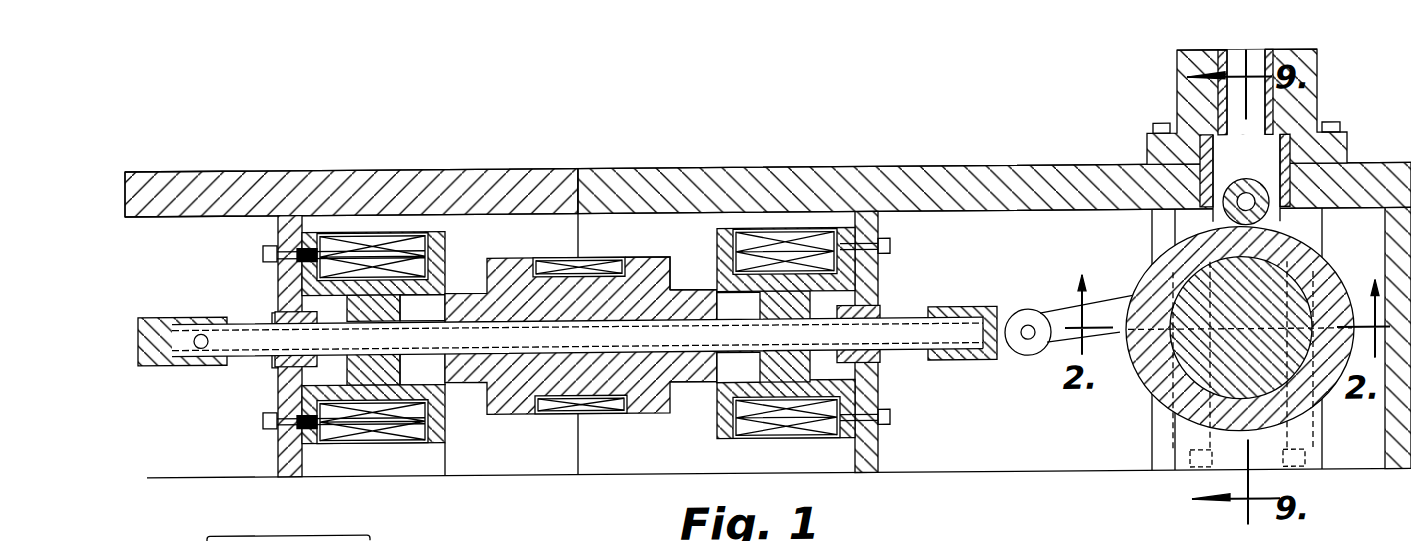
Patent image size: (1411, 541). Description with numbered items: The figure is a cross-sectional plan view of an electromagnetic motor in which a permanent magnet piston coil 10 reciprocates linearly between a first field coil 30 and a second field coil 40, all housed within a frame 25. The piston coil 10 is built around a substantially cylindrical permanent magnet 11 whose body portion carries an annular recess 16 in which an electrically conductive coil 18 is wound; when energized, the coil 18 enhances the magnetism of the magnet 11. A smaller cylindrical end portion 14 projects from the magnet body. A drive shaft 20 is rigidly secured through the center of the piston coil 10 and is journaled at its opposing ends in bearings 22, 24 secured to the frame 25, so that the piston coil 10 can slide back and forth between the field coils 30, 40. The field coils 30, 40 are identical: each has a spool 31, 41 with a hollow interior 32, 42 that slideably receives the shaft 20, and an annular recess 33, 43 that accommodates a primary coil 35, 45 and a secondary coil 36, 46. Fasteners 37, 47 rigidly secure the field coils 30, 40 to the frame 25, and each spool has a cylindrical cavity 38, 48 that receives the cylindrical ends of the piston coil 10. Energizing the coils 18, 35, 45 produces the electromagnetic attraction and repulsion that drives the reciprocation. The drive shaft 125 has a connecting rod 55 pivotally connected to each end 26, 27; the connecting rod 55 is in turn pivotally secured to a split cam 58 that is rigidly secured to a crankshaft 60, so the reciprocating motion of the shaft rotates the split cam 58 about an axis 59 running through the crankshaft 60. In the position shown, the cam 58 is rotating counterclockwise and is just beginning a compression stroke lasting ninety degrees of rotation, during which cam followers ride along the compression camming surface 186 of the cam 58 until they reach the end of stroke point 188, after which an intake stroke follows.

The permanent magnet piston coil 10 is at (672, 266).
The permanent magnet 11 is at (626, 275).
The cylindrical end portion 14 is at (468, 297).
The annular recess 16 is at (543, 418).
The electrically conductive coil 18 is at (543, 263).
The drive shaft 20 is at (422, 305).
The bearing 22 is at (290, 325).
The bearing 24 is at (903, 318).
The frame 25 is at (650, 185).
The shaft end 26 is at (190, 350).
The shaft end 27 is at (946, 350).
The first field coil 30 is at (455, 266).
The spool 31 is at (449, 258).
The hollow interior 32 is at (318, 323).
The annular recess 33 is at (330, 258).
The primary coil 35 is at (374, 262).
The secondary coil 36 is at (328, 240).
The fastener 37 is at (268, 257).
The cylindrical cavity 38 is at (422, 367).
The second field coil 40 is at (707, 437).
The spool 41 is at (714, 230).
The hollow interior 42 is at (738, 334).
The annular recess 43 is at (745, 262).
The primary coil 45 is at (776, 408).
The secondary coil 46 is at (820, 440).
The fastener 47 is at (880, 253).
The cylindrical cavity 48 is at (714, 410).
The connecting rod 55 is at (1062, 345).
The split cam 58 is at (1170, 425).
The axis 59 is at (1245, 348).
The crankshaft 60 is at (1342, 284).
The drive shaft 125 is at (950, 328).
The compression camming surface 186 is at (1165, 262).
The end of stroke point 188 is at (1128, 342).